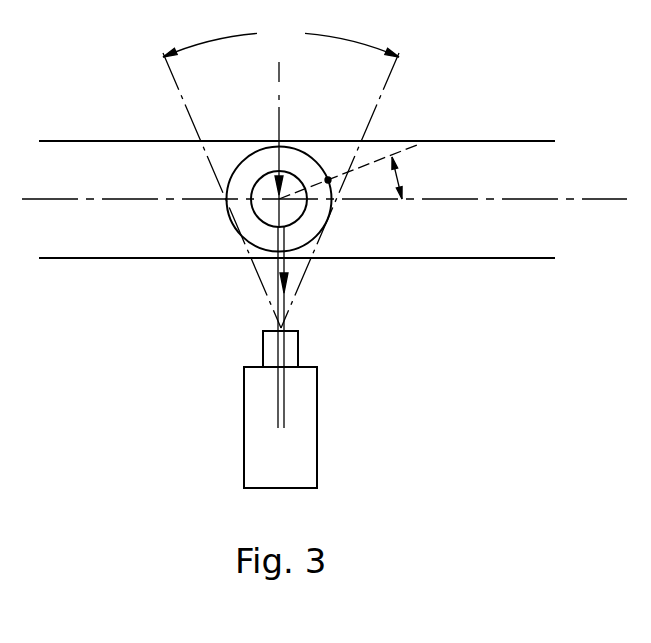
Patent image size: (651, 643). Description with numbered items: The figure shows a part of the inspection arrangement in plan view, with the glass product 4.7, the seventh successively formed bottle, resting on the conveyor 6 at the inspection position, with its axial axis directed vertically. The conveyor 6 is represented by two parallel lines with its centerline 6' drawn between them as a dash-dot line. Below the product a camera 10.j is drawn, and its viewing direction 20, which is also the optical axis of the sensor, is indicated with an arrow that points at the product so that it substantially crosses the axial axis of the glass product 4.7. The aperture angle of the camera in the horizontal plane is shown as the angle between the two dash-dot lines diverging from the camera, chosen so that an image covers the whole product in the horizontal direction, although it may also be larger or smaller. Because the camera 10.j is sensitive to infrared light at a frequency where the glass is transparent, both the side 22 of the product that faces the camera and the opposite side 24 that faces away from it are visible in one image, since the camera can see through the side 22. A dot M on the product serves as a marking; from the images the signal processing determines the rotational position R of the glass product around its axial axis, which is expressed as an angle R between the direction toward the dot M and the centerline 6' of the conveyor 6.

The conveyor 6 is at (297, 200).
The centerline of the conveyor 6' is at (324, 165).
The viewing direction 20 is at (283, 75).
The side located opposite side 22 24 is at (263, 163).
The side of the glass product facing the sensor 22 is at (268, 228).
The glass product 4.7 is at (312, 228).
The dot M is at (328, 180).
The rotational position R is at (417, 178).
The camera 10.j is at (317, 466).